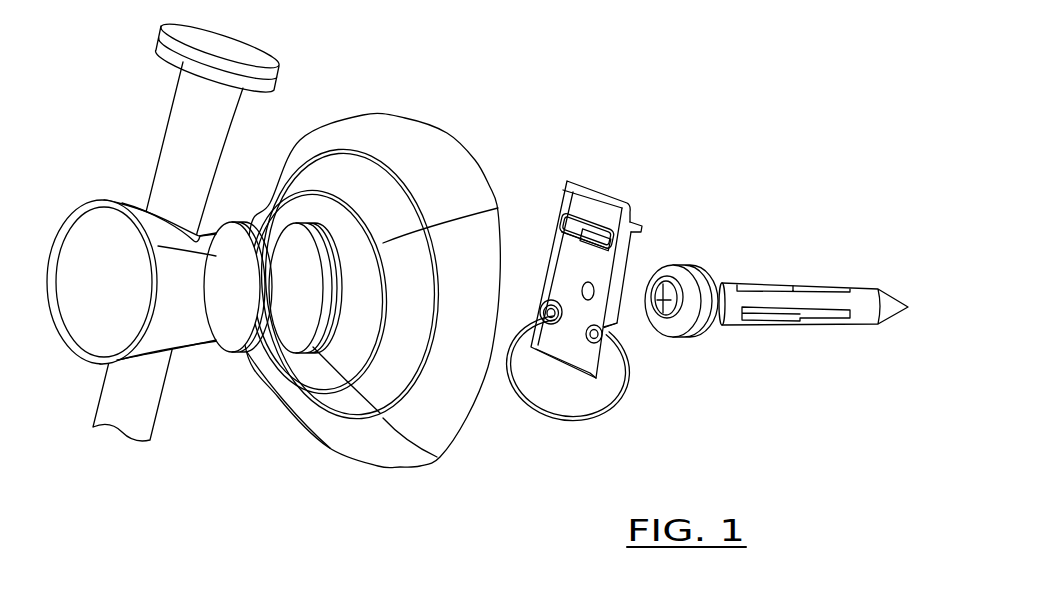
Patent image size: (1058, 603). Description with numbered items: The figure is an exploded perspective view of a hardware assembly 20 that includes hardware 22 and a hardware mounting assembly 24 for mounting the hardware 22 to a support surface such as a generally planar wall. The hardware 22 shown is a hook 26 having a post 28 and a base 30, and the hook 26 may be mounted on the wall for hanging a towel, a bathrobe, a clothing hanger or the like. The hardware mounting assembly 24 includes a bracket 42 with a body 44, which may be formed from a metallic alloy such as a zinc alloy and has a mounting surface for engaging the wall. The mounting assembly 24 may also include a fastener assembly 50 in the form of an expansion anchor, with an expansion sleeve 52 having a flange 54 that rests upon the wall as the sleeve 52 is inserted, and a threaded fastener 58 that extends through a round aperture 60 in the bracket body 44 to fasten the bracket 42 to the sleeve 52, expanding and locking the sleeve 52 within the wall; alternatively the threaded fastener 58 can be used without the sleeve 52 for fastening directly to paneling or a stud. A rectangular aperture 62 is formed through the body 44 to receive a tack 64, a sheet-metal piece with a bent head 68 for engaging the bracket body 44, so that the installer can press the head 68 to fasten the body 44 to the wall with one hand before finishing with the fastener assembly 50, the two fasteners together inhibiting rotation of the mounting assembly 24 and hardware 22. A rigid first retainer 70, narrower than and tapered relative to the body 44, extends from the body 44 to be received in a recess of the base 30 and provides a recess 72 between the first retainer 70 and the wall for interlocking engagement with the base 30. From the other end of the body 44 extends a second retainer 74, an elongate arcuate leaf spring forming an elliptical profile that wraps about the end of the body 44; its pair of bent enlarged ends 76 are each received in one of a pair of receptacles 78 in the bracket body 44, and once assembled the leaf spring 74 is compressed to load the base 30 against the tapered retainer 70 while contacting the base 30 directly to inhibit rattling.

The hardware assembly 20 is at (704, 105).
The hardware 22 is at (349, 110).
The hardware mounting assembly 24 is at (554, 187).
The hook 26 is at (153, 431).
The post 28 is at (188, 349).
The base 30 is at (327, 447).
The bracket 42 is at (647, 256).
The body 44 is at (624, 312).
The fastener assembly 50 is at (859, 279).
The expansion sleeve 52 is at (828, 318).
The flange 54 is at (702, 336).
The threaded fastener 58 is at (674, 298).
The round aperture 60 is at (585, 287).
The rectangular aperture 62 is at (598, 236).
The tack 64 is at (558, 226).
The head 68 is at (576, 252).
The first retainer 70 is at (625, 197).
The recess 72 is at (639, 216).
The second retainer 74 is at (552, 421).
The bent enlarged ends 76 is at (578, 344).
The receptacles 78 is at (600, 342).